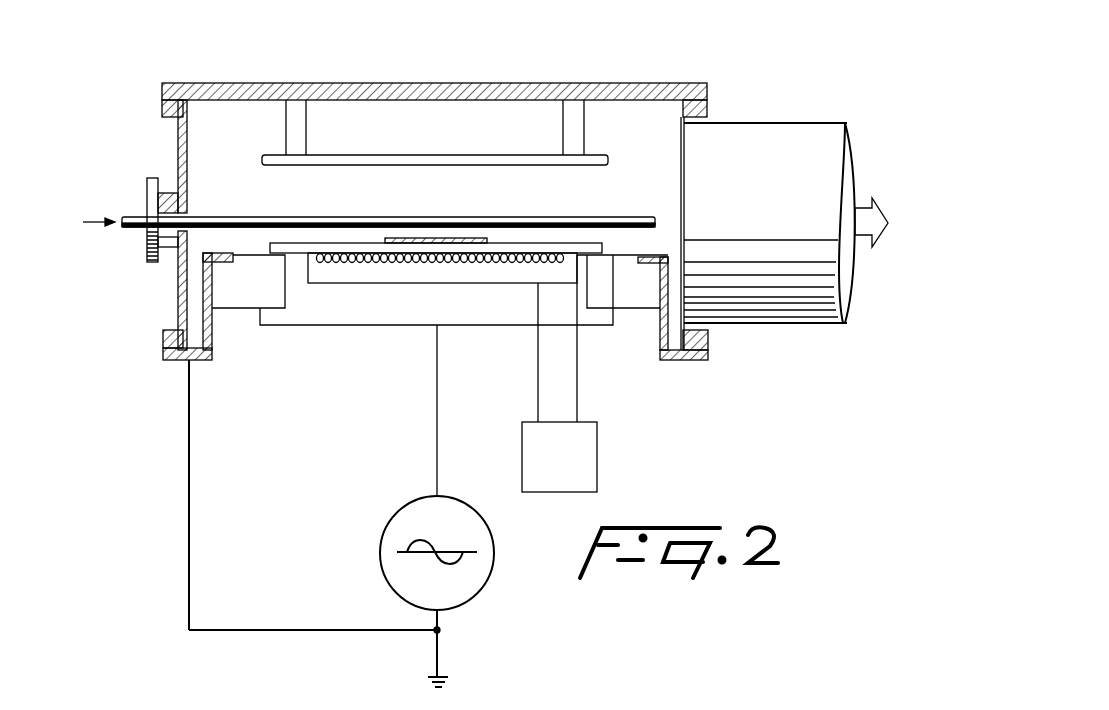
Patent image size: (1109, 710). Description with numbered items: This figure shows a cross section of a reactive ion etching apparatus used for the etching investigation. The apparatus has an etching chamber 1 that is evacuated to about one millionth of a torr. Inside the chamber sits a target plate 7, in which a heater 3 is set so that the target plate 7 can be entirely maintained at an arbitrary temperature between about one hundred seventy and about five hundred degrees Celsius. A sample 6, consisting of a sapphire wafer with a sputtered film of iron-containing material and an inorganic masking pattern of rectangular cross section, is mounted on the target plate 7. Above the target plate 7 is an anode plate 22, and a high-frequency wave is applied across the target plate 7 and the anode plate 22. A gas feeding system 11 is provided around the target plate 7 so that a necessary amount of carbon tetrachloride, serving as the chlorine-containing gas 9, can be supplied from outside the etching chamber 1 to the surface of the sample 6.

The etching chamber 1 is at (178, 150).
The heater 3 is at (368, 262).
The sample 6 is at (470, 242).
The target plate 7 is at (288, 248).
The chlorine-containing gas 9 is at (87, 224).
The gas feeding system 11 is at (627, 217).
The anode plate 22 is at (468, 152).